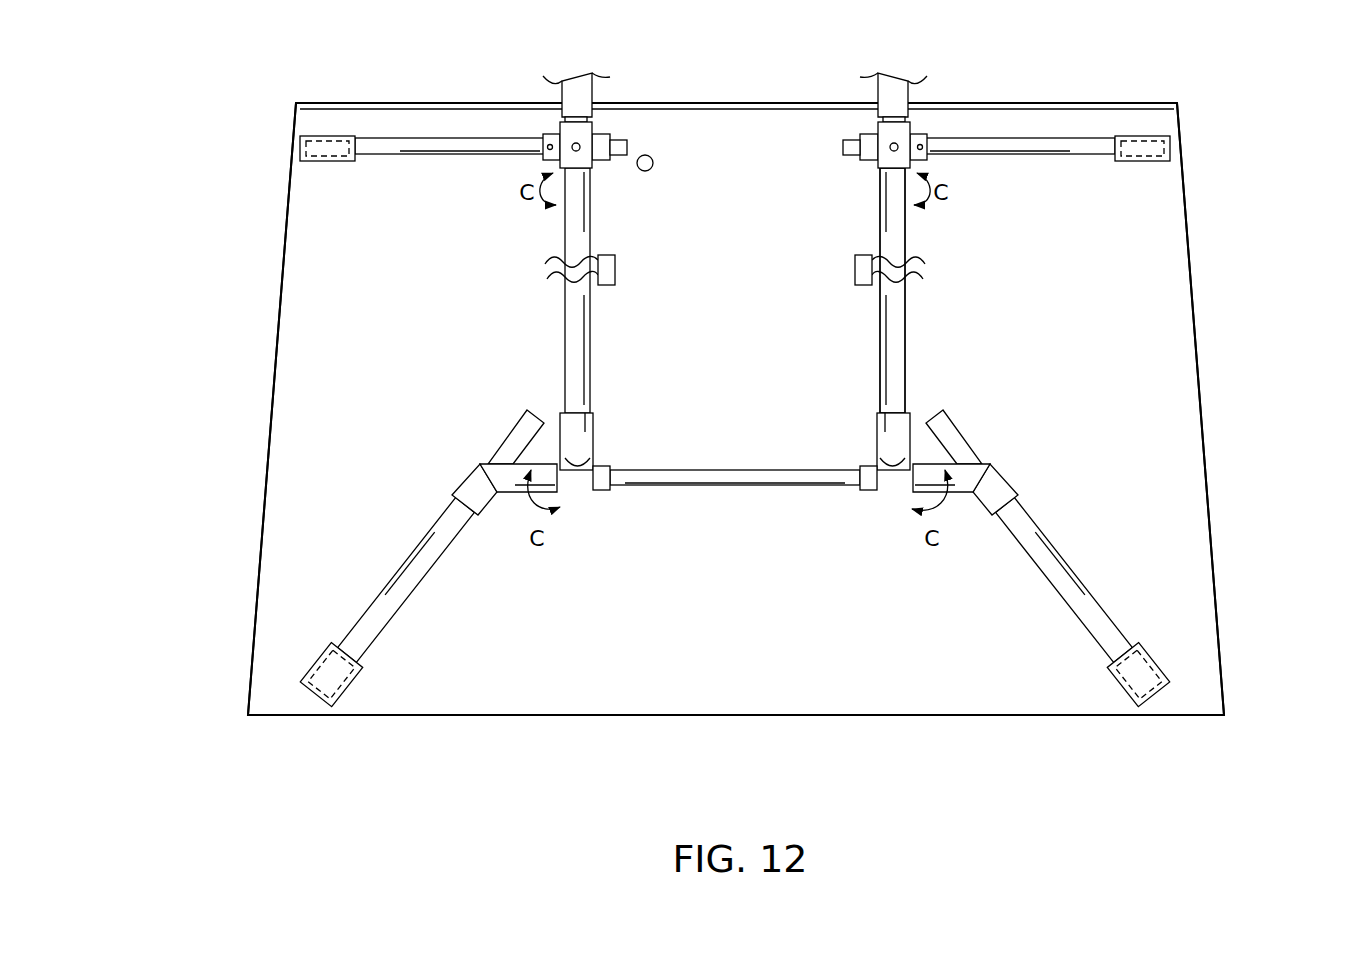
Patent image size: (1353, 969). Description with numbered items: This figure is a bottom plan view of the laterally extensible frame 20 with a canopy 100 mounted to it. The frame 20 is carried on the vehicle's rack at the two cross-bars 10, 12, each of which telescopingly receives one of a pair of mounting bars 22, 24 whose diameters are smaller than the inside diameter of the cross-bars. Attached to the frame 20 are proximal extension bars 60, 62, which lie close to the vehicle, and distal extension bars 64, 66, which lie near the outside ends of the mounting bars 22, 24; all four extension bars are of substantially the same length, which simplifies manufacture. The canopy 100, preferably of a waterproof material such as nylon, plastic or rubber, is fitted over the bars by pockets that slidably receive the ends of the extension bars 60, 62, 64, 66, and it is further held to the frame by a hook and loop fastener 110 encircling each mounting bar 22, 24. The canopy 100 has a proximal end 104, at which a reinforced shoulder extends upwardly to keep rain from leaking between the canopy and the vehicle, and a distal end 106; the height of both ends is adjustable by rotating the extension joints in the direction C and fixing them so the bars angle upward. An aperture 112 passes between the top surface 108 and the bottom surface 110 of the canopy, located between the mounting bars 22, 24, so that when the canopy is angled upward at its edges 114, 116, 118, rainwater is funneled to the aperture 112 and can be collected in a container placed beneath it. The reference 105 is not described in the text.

The cross-bar 10 is at (556, 90).
The cross-bar 12 is at (910, 95).
The frame 20 is at (878, 204).
The mounting bar 22 is at (558, 234).
The mounting bar 24 is at (911, 228).
The proximal extension bar 60 is at (412, 132).
The proximal extension bar 62 is at (1026, 132).
The distal extension bar 64 is at (1042, 599).
The distal extension bar 66 is at (446, 609).
The canopy 100 is at (1194, 297).
The proximal end 104 is at (700, 102).
The upper rail 105 is at (795, 103).
The distal end 106 is at (718, 717).
The top surface 108 is at (797, 715).
The bottom surface 110 is at (631, 285).
The aperture 112 is at (654, 163).
The edge 114 is at (1200, 410).
The edge 116 is at (915, 715).
The edge 118 is at (267, 472).